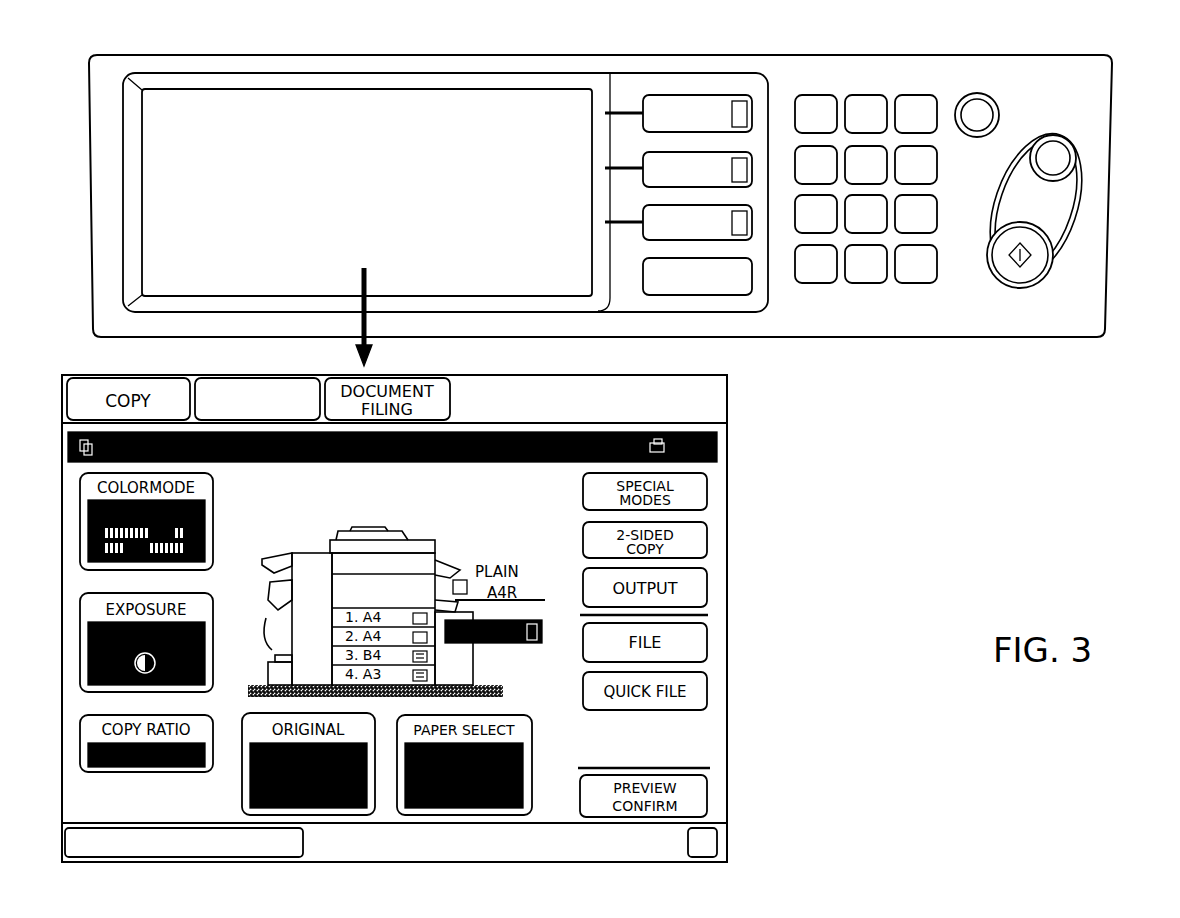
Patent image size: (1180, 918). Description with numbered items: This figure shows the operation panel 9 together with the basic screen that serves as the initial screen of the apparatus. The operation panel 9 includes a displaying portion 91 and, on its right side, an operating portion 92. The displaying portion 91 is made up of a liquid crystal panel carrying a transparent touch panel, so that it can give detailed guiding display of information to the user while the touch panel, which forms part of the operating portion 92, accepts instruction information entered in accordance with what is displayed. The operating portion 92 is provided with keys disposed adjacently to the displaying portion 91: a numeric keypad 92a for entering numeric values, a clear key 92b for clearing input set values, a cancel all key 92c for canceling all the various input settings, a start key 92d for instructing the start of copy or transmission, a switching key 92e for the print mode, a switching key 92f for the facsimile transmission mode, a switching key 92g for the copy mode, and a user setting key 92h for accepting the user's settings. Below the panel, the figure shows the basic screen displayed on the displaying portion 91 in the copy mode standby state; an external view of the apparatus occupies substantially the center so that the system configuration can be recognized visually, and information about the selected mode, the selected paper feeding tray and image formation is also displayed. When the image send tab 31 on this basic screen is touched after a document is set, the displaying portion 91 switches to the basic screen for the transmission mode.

The operation panel 9 is at (126, 50).
The displaying portion 91 is at (455, 100).
The operating portion 92 is at (871, 322).
The numeric keypad 92a is at (870, 86).
The clear key 92b is at (998, 100).
The cancel all key 92c is at (1076, 150).
The start key 92d is at (1053, 243).
The switching key for the print mode 92e is at (697, 95).
The switching key for the facsimile transmission mode 92f is at (643, 165).
The switching key for the copy mode 92g is at (643, 216).
The user setting key 92h is at (752, 278).
The image send tab 31 is at (250, 378).